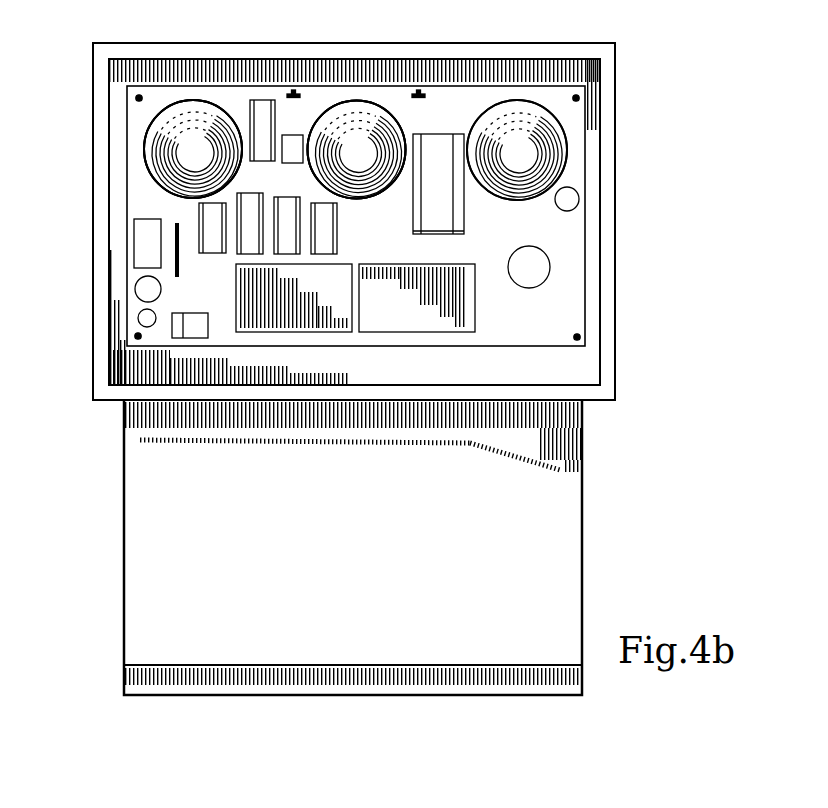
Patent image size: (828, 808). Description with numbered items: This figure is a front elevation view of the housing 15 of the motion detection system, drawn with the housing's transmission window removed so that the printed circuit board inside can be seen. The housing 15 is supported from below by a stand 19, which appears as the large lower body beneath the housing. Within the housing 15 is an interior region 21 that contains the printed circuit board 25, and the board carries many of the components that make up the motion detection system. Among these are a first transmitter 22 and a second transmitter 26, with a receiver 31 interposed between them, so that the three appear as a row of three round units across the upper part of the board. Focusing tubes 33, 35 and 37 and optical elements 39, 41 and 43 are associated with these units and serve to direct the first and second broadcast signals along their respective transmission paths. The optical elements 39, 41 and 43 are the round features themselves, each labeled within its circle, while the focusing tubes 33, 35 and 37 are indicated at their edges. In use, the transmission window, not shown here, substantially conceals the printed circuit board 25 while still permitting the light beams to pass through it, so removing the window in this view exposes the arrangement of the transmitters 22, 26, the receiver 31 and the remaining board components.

The housing 15 is at (632, 360).
The stand 19 is at (350, 537).
The interior region 21 is at (393, 374).
The first transmitter 22 is at (142, 153).
The printed circuit board 25 is at (391, 240).
The second transmitter 26 is at (538, 200).
The receiver 31 is at (388, 115).
The focusing tube 33 is at (160, 188).
The focusing tube 35 is at (357, 102).
The focusing tube 37 is at (567, 160).
The optical element 39 is at (198, 151).
The optical element 41 is at (355, 152).
The optical element 43 is at (521, 154).